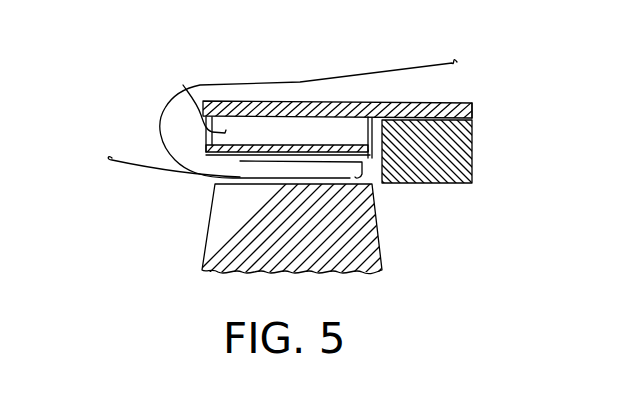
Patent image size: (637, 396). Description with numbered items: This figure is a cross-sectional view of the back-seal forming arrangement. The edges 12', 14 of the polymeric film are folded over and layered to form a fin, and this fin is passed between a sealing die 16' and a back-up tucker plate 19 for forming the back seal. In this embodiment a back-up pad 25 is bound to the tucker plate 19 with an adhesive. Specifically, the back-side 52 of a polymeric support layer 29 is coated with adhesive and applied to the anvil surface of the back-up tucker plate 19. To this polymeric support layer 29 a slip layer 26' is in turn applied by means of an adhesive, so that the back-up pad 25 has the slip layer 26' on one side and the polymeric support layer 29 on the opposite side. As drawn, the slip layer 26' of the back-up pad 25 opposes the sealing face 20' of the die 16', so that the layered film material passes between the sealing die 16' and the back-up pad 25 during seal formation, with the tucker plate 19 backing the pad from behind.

The back-side of polymeric support layer 52 is at (296, 105).
The back-up tucker plate 19 is at (470, 103).
The polymeric support layer 29 is at (180, 91).
The back-up pad 25 is at (200, 142).
The slip layer 26' is at (263, 184).
The sealing face 20' is at (265, 195).
The edge of polymeric film 14 is at (327, 184).
The edge of polymeric film 12' is at (427, 154).
The sealing die 16' is at (306, 230).